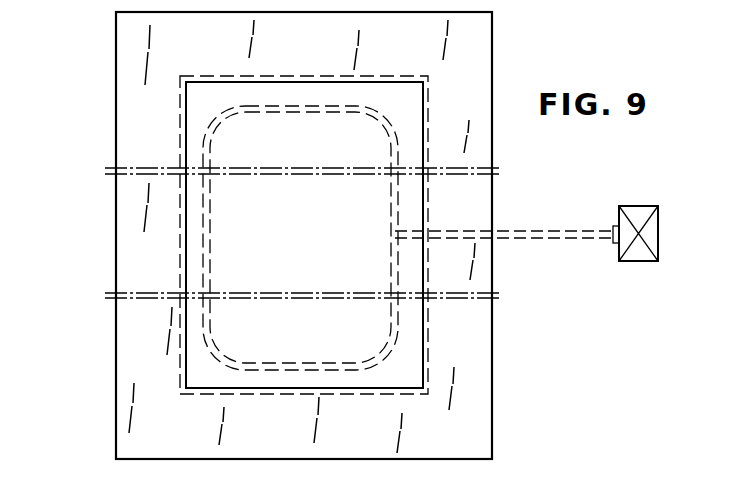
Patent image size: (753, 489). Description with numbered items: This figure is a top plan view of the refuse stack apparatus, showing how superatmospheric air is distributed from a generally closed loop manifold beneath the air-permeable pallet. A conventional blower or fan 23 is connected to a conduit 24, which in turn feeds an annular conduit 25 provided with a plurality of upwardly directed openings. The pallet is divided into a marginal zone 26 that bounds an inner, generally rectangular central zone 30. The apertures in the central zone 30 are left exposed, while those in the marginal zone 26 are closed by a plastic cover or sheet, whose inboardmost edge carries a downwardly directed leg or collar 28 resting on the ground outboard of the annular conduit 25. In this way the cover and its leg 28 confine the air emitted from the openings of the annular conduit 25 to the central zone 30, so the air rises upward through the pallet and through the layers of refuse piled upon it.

The blower or fan 23 is at (636, 215).
The conduit 24 is at (562, 236).
The annular conduit 25 is at (390, 209).
The marginal zone 26 is at (470, 62).
The leg or collar 28 is at (187, 101).
The central zone 30 is at (410, 125).